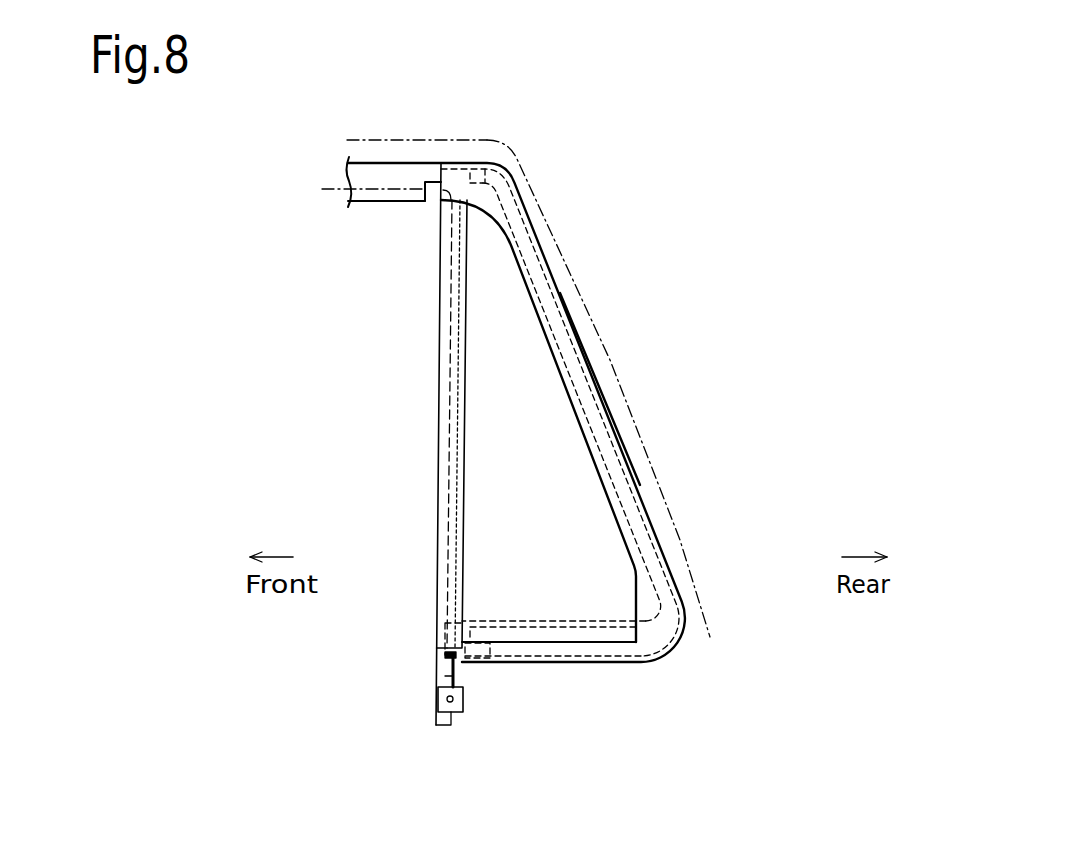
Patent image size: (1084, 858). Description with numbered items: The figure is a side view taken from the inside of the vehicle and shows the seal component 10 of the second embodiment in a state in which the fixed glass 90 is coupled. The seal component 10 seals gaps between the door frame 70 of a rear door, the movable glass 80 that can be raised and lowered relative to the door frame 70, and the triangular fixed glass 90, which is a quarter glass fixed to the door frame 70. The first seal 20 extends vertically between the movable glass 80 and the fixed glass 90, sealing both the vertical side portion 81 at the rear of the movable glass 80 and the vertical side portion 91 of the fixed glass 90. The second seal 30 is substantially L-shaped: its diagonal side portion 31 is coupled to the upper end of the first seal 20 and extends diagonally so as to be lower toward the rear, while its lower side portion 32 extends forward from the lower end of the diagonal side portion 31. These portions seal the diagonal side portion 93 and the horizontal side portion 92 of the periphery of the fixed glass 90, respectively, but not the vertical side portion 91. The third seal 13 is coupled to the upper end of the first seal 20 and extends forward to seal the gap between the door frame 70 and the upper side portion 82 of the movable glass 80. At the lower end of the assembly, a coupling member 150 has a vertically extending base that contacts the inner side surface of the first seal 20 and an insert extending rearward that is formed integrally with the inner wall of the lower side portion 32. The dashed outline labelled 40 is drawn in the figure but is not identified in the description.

The seal component 10 is at (528, 206).
The third seal 13 is at (391, 163).
The movable glass 80 is at (416, 183).
The upper side portion 82 is at (339, 189).
The first seal 20 is at (437, 320).
The second seal 30 is at (544, 256).
The diagonal side portion 31 is at (584, 345).
The lower side portion 32 is at (546, 663).
The window glass 40 is at (549, 620).
The door frame 70 is at (575, 268).
The vertical side portion 81 is at (456, 379).
The fixed glass 90 is at (598, 534).
The vertical side portion 91 is at (450, 436).
The horizontal side portion 92 is at (641, 656).
The diagonal side portion 93 is at (616, 410).
The coupling member 150 is at (437, 713).